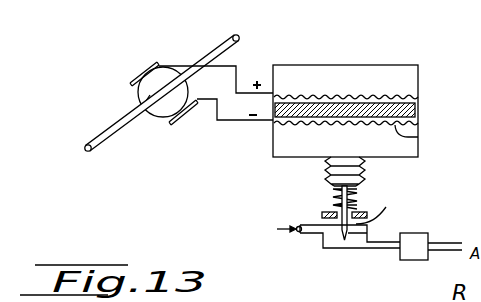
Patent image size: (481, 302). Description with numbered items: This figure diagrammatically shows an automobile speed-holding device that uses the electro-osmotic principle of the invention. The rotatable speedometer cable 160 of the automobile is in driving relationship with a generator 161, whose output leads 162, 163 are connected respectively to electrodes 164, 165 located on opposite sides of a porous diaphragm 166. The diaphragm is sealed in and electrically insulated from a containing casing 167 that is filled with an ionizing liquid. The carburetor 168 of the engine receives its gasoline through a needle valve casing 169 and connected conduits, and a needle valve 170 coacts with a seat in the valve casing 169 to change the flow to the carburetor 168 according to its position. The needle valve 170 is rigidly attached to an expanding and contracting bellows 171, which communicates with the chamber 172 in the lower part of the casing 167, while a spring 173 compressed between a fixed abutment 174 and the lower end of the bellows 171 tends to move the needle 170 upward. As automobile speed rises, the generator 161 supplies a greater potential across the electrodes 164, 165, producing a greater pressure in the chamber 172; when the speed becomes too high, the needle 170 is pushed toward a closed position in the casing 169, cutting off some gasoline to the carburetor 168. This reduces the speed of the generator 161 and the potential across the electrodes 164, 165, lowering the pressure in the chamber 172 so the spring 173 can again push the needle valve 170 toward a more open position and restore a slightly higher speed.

The speedometer cable 160 is at (223, 48).
The generator 161 is at (138, 94).
The output lead 162 is at (236, 66).
The output lead 163 is at (208, 100).
The electrode 164 is at (358, 97).
The electrode 165 is at (418, 137).
The porous diaphragm 166 is at (417, 113).
The casing 167 is at (347, 65).
The carburetor 168 is at (418, 260).
The needle valve casing 169 is at (353, 249).
The needle valve 170 is at (380, 207).
The bellows 171 is at (325, 168).
The chamber 172 is at (347, 140).
The spring 173 is at (333, 199).
The fixed abutment 174 is at (367, 213).